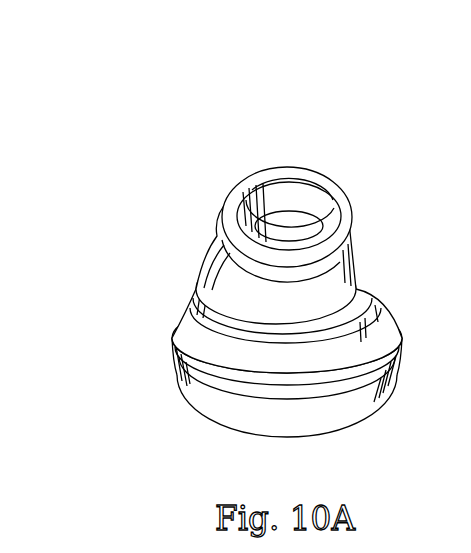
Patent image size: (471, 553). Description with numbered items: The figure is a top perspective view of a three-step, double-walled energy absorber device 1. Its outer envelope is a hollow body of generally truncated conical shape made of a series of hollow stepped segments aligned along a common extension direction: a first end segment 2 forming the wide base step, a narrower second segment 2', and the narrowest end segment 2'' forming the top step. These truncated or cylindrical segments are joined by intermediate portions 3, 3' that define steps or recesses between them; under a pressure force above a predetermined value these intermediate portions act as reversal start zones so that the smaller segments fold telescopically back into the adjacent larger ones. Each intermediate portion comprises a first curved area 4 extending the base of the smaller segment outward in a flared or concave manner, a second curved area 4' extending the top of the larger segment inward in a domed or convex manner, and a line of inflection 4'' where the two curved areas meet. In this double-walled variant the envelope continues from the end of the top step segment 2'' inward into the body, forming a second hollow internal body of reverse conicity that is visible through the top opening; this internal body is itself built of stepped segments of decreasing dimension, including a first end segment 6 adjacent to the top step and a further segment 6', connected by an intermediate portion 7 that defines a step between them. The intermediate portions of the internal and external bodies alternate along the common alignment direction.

The energy absorber device 1 is at (158, 87).
The first end segment 2 is at (302, 361).
The second segment 2' is at (300, 307).
The end segment forming the top step 2'' is at (287, 266).
The intermediate portion 3 is at (186, 297).
The intermediate portion 3' is at (230, 205).
The first curved area 4 is at (240, 313).
The second curved area 4' is at (217, 251).
The line of inflection 4'' is at (227, 310).
The first end segment of the hollow internal body 6 is at (274, 160).
The hollow stepped segment of the internal body 6' is at (290, 159).
The intermediate portion of the internal body 7 is at (318, 201).